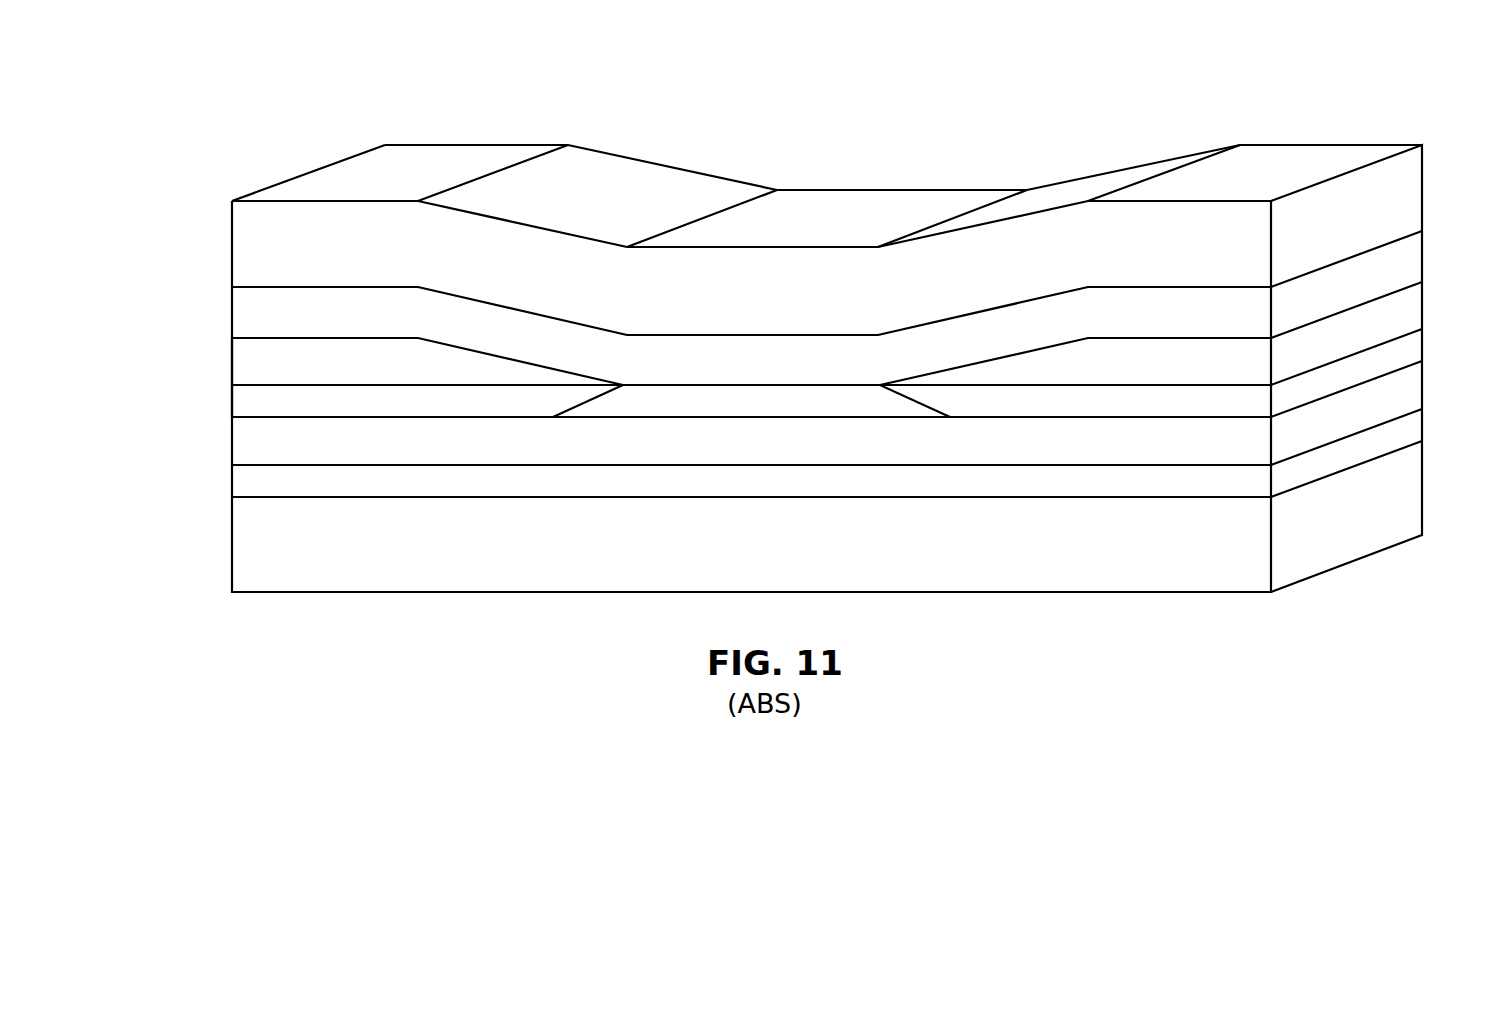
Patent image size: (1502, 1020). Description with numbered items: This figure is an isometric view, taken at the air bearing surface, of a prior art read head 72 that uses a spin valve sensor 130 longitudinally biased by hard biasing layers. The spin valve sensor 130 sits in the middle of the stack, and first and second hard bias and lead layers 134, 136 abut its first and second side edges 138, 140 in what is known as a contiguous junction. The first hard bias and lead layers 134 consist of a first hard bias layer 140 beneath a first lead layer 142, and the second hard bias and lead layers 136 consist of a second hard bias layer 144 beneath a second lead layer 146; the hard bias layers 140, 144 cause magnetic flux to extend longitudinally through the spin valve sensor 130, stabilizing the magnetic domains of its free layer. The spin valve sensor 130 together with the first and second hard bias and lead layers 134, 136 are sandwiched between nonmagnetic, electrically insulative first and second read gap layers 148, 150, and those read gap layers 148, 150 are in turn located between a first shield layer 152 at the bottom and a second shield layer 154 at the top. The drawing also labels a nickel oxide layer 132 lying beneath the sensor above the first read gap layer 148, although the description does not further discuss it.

The read head 72 is at (900, 166).
The spin valve sensor 130 is at (660, 385).
The NiO antiferromagnetic pinning layer 132 is at (950, 445).
The first hard bias and lead layers 134 is at (228, 338).
The second hard bias and lead layers 136 is at (1432, 281).
The first side edge 138 is at (574, 408).
The first hard bias layer 140 is at (277, 402).
The first lead layer 142 is at (277, 350).
The second hard bias layer 144 is at (1218, 402).
The second lead layer 146 is at (1218, 352).
The first read gap layer 148 is at (525, 487).
The second read gap layer 150 is at (483, 318).
The first shield layer 152 is at (410, 572).
The second shield layer 154 is at (680, 180).